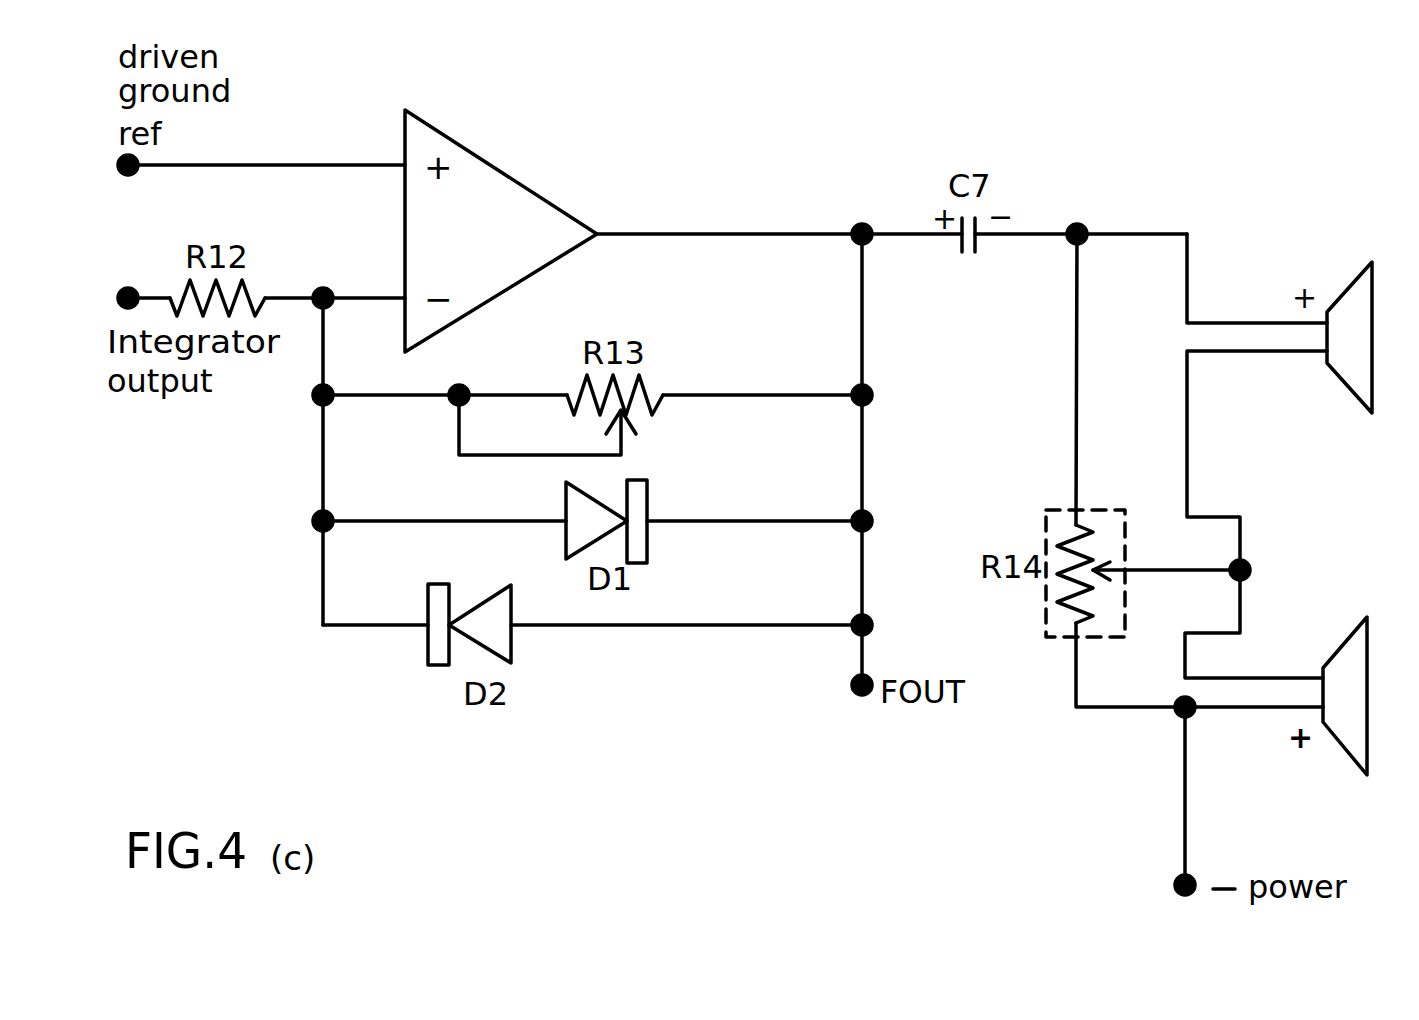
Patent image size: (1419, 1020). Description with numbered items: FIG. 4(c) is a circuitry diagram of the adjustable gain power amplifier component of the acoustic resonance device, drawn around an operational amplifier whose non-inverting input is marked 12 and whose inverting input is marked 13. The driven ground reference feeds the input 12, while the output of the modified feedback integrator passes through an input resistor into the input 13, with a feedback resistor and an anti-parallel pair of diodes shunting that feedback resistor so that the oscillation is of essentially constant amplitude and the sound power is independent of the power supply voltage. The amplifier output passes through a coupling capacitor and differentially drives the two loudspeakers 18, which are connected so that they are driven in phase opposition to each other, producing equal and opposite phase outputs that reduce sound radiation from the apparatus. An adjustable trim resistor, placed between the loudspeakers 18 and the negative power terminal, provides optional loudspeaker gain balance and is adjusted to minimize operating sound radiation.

The non-inverting input (driven ground reference) 12 is at (261, 146).
The inverting input (integrator output) 13 is at (364, 323).
The loudspeakers 18 is at (1347, 388).